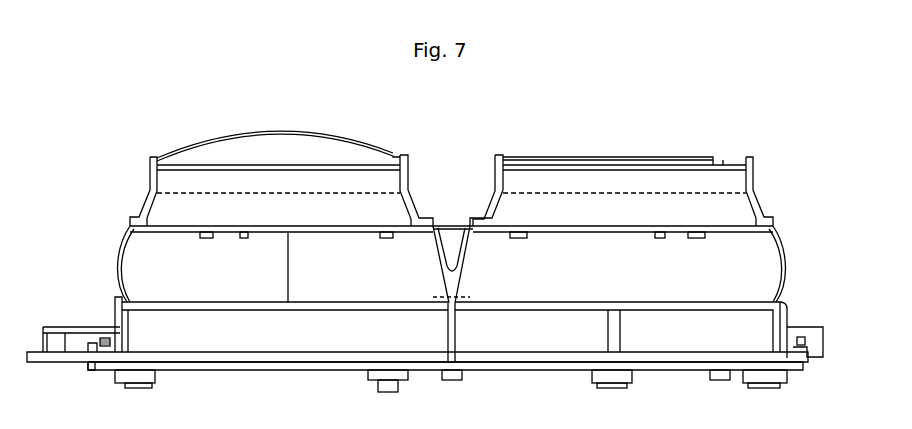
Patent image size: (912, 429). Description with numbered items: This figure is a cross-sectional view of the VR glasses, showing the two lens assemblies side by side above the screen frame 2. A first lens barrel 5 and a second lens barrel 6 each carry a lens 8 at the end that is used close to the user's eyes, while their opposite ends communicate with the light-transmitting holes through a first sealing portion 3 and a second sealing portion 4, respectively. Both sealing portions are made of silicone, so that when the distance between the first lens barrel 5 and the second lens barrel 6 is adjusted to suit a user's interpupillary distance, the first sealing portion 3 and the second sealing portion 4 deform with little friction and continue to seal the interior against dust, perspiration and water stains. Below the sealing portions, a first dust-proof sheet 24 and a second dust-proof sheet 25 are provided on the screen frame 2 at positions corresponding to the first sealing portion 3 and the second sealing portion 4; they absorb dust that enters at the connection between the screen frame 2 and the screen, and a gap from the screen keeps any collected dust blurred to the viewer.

The screen frame 2 is at (110, 342).
The first sealing portion 3 is at (125, 248).
The second sealing portion 4 is at (832, 243).
The first lens barrel 5 is at (152, 182).
The second lens barrel 6 is at (756, 181).
The lens 8 is at (210, 147).
The first dust-proof sheet 24 is at (152, 304).
The second dust-proof sheet 25 is at (757, 303).